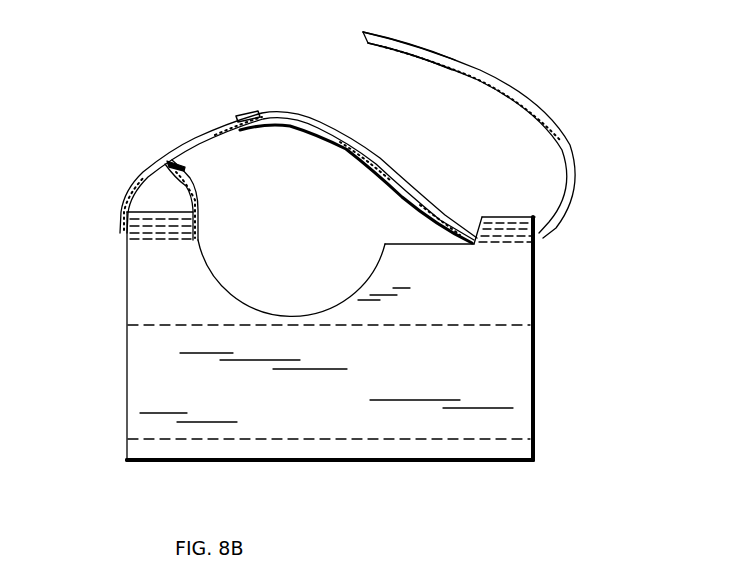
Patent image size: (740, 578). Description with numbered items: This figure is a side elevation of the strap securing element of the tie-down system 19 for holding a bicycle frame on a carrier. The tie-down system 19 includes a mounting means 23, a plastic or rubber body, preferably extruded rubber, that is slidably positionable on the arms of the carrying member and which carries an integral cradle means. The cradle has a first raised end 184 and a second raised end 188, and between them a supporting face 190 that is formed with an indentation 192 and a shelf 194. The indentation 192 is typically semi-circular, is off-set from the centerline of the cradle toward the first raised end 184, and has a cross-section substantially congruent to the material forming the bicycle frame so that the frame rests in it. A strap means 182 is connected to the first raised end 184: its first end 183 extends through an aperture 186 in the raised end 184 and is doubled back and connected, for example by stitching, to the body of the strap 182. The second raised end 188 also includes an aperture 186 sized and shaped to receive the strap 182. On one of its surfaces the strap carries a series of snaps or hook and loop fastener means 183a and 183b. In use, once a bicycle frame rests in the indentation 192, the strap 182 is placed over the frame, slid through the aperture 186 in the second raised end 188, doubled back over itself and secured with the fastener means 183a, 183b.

The tie-down system 19 is at (136, 73).
The mounting means 23 is at (500, 489).
The strap means 182 is at (574, 148).
The first end of the strap means 183 is at (192, 178).
The hook and loop fastener means 183a is at (404, 48).
The hook and loop fastener means 183b is at (352, 136).
The first raised end 184 is at (125, 268).
The aperture 186 is at (203, 237).
The second raised end 188 is at (509, 216).
The supporting face 190 is at (368, 248).
The indentation 192 is at (297, 317).
The shelf 194 is at (425, 245).